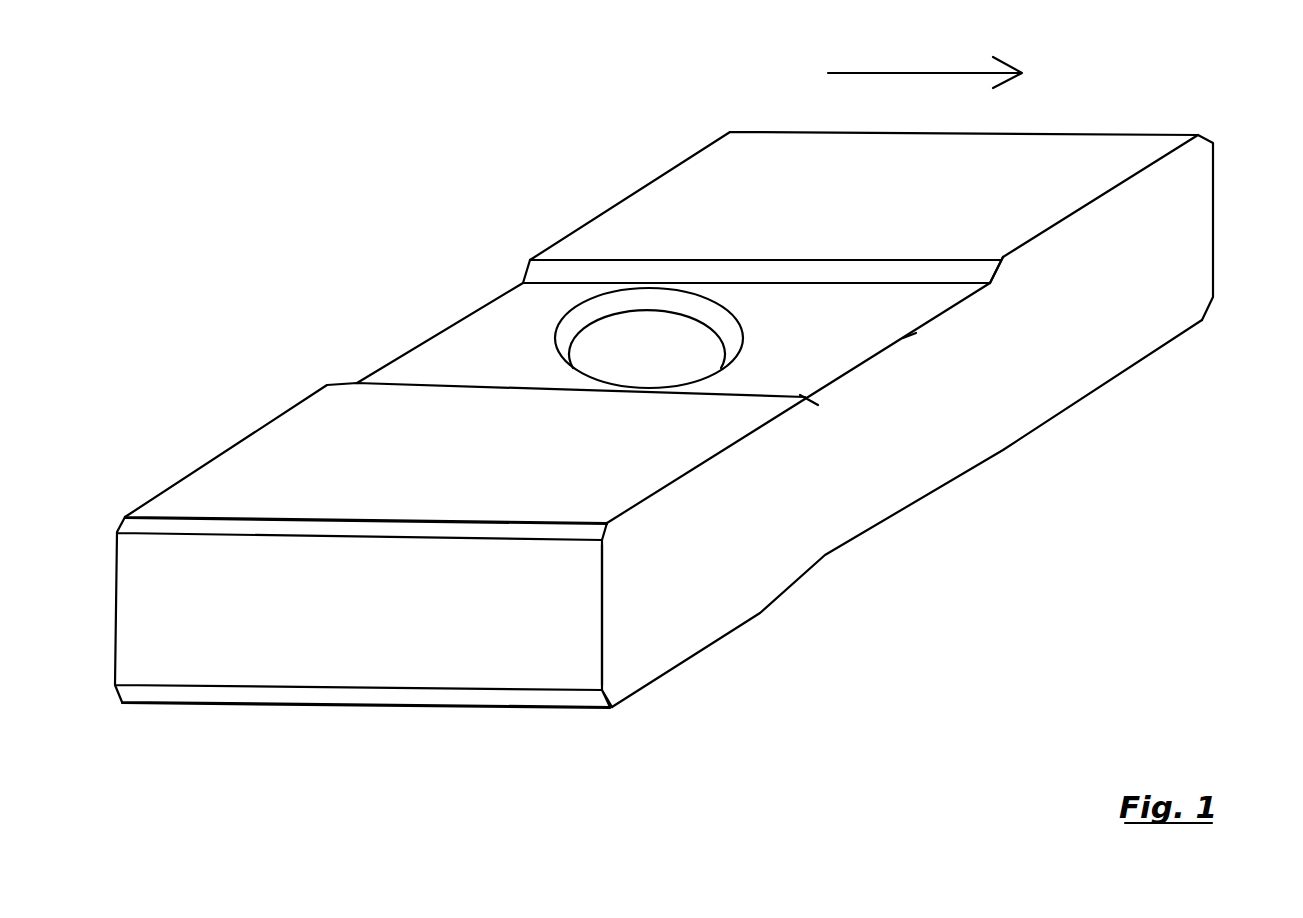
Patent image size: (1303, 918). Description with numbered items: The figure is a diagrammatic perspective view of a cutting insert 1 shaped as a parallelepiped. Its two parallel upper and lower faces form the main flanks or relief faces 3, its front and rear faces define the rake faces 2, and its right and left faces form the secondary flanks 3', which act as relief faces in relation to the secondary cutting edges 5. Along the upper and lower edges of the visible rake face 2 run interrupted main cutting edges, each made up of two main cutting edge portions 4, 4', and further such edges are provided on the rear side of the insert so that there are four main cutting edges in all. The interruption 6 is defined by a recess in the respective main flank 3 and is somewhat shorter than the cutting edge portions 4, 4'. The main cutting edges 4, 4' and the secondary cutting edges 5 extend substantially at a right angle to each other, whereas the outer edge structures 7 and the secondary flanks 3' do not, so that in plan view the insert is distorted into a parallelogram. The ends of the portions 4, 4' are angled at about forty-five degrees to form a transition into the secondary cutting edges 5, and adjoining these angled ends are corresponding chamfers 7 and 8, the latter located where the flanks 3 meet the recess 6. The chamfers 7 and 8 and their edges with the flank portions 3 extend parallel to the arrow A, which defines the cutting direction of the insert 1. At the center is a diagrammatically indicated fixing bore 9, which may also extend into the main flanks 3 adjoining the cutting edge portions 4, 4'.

The cutting insert 1 is at (706, 445).
The rake face 2 is at (733, 562).
The main flank 3 is at (465, 450).
The secondary flank 3' is at (363, 612).
The main cutting edge portion 4 is at (713, 382).
The main cutting edge portion 4' is at (964, 402).
The secondary cutting edge 5 is at (607, 613).
The interruption 6 is at (1047, 482).
The chamfer 7 is at (558, 530).
The chamfer 8 is at (975, 272).
The fixing bore 9 is at (627, 330).
The arrow defining the cutting direction A is at (925, 54).